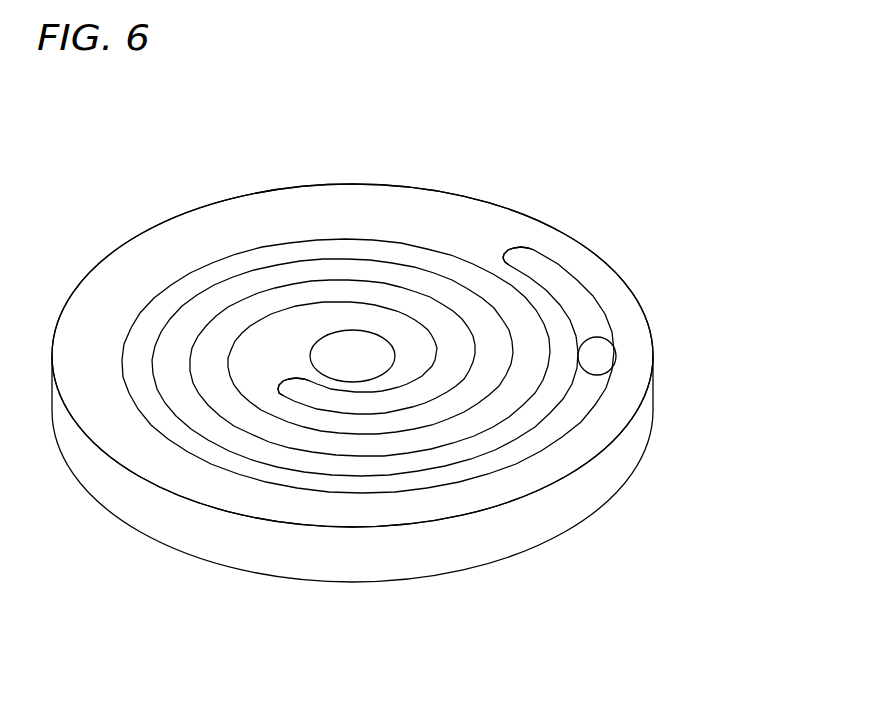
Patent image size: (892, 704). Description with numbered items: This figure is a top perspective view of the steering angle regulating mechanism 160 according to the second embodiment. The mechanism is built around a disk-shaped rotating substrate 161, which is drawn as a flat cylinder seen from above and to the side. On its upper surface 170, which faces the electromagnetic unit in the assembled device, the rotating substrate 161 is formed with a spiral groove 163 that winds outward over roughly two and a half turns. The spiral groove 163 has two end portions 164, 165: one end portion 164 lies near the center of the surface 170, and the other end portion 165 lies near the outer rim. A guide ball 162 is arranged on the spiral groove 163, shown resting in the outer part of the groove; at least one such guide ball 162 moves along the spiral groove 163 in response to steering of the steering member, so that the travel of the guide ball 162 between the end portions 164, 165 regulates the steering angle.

The steering angle regulating mechanism 160 is at (682, 116).
The rotating substrate 161 is at (108, 242).
The guide ball 162 is at (603, 350).
The spiral groove 163 is at (228, 473).
The end portion 164 is at (298, 386).
The end portion 165 is at (550, 265).
The surface 170 is at (90, 388).